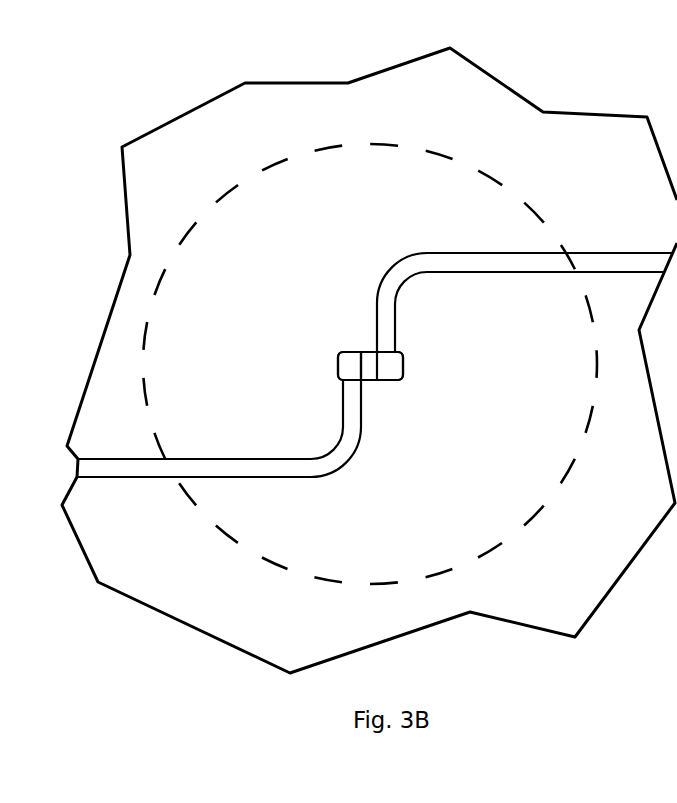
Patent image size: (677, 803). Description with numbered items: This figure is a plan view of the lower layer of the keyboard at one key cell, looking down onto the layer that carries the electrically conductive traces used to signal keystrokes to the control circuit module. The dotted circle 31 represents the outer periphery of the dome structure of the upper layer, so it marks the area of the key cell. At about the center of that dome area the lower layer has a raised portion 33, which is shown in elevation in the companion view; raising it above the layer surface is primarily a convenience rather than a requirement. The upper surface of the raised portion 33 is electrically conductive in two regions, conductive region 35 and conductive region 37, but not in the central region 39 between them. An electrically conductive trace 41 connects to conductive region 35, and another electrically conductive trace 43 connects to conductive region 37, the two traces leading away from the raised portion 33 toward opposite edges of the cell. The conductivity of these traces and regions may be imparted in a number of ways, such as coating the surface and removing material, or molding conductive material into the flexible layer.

The dotted circle 31 is at (226, 192).
The raised portion 33 is at (377, 400).
The conductive region 35 is at (347, 354).
The conductive region 37 is at (396, 368).
The central region 39 is at (368, 352).
The electrically conductive trace 41 is at (279, 465).
The electrically conductive trace 43 is at (424, 257).